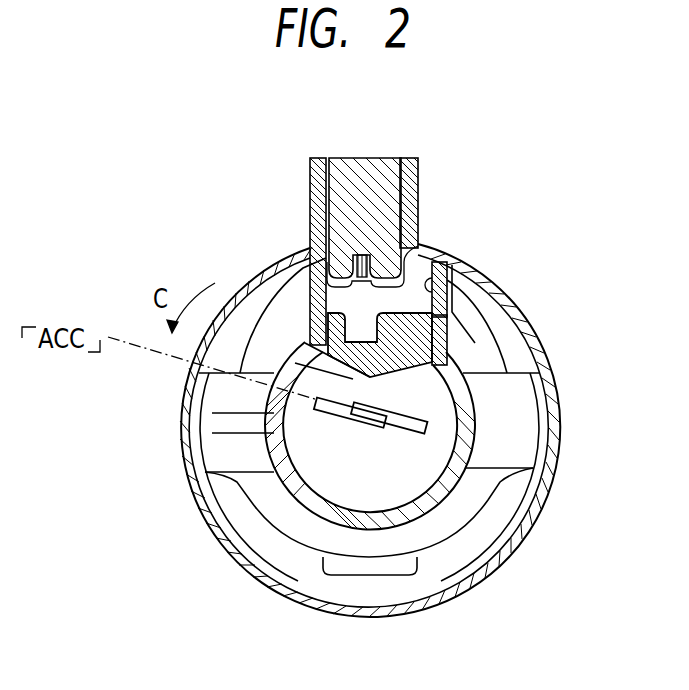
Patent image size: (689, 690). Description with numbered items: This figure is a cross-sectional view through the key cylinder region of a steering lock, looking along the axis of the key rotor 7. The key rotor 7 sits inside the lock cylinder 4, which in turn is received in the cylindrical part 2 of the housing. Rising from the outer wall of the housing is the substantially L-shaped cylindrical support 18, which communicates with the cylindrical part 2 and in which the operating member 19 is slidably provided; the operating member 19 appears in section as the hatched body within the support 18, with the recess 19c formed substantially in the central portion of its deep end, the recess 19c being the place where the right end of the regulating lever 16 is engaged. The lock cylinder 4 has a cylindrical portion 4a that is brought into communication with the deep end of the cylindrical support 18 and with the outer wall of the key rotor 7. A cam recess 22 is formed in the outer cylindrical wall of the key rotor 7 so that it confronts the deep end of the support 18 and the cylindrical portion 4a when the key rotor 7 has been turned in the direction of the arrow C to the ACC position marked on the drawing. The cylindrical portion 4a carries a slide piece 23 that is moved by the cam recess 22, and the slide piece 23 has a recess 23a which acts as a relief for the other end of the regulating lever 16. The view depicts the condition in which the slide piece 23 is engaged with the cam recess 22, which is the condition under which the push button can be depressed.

The cylindrical part 2 is at (542, 520).
The lock cylinder 4 is at (402, 507).
The cylindrical portion 4a is at (452, 270).
The key rotor 7 is at (393, 494).
The regulating lever 16 is at (297, 246).
The cylindrical support 18 is at (312, 168).
The operating member 19 is at (377, 167).
The recess 19c is at (423, 240).
The cam recess 22 is at (440, 351).
The slide piece 23 is at (430, 330).
The recess 23a is at (308, 292).